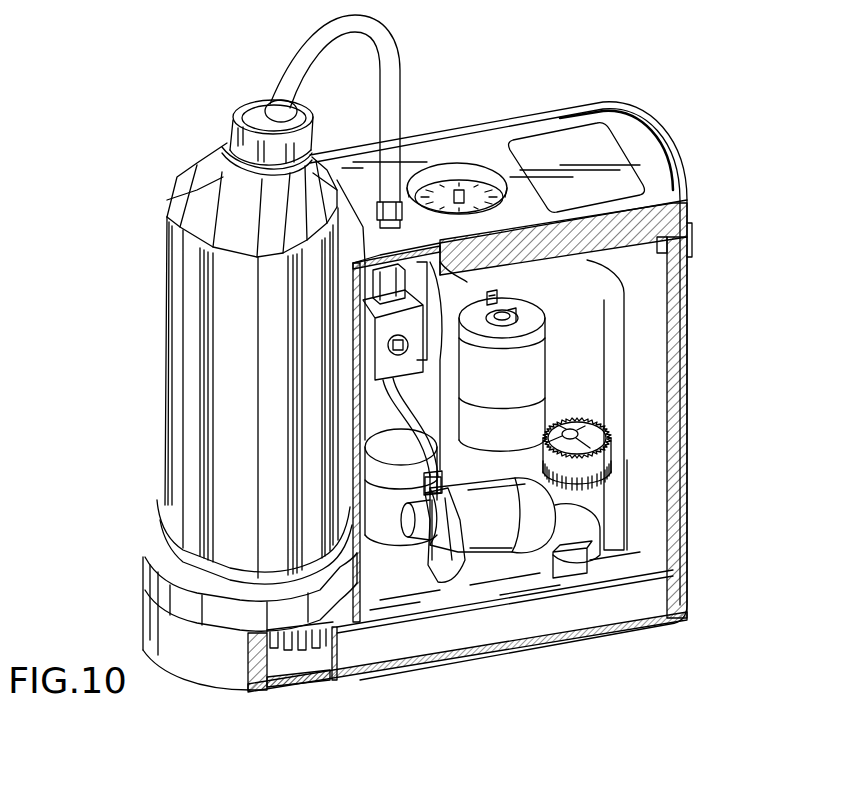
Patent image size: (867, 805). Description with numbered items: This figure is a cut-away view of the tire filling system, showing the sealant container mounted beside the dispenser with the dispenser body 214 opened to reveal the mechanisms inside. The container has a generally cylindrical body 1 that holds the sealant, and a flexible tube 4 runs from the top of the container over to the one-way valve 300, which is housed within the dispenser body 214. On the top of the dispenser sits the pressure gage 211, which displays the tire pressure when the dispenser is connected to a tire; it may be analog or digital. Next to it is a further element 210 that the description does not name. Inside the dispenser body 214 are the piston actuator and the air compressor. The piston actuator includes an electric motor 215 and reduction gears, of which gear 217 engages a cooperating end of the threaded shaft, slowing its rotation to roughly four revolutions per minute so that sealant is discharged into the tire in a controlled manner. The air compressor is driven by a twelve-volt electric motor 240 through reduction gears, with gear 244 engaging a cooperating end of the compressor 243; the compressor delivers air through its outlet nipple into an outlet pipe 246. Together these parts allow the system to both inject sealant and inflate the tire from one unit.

The body 1 is at (165, 391).
The flexible tube 4 is at (285, 72).
The housing 210 is at (585, 163).
The pressure gage 211 is at (470, 187).
The dispenser body 214 is at (143, 612).
The electric motor 215 is at (383, 537).
The reduction gear 217 is at (293, 648).
The electric motor 240 is at (528, 392).
The compressor 243 is at (597, 510).
The reduction gear 244 is at (560, 430).
The outlet pipe 246 is at (375, 425).
The one-way valve 300 is at (372, 350).